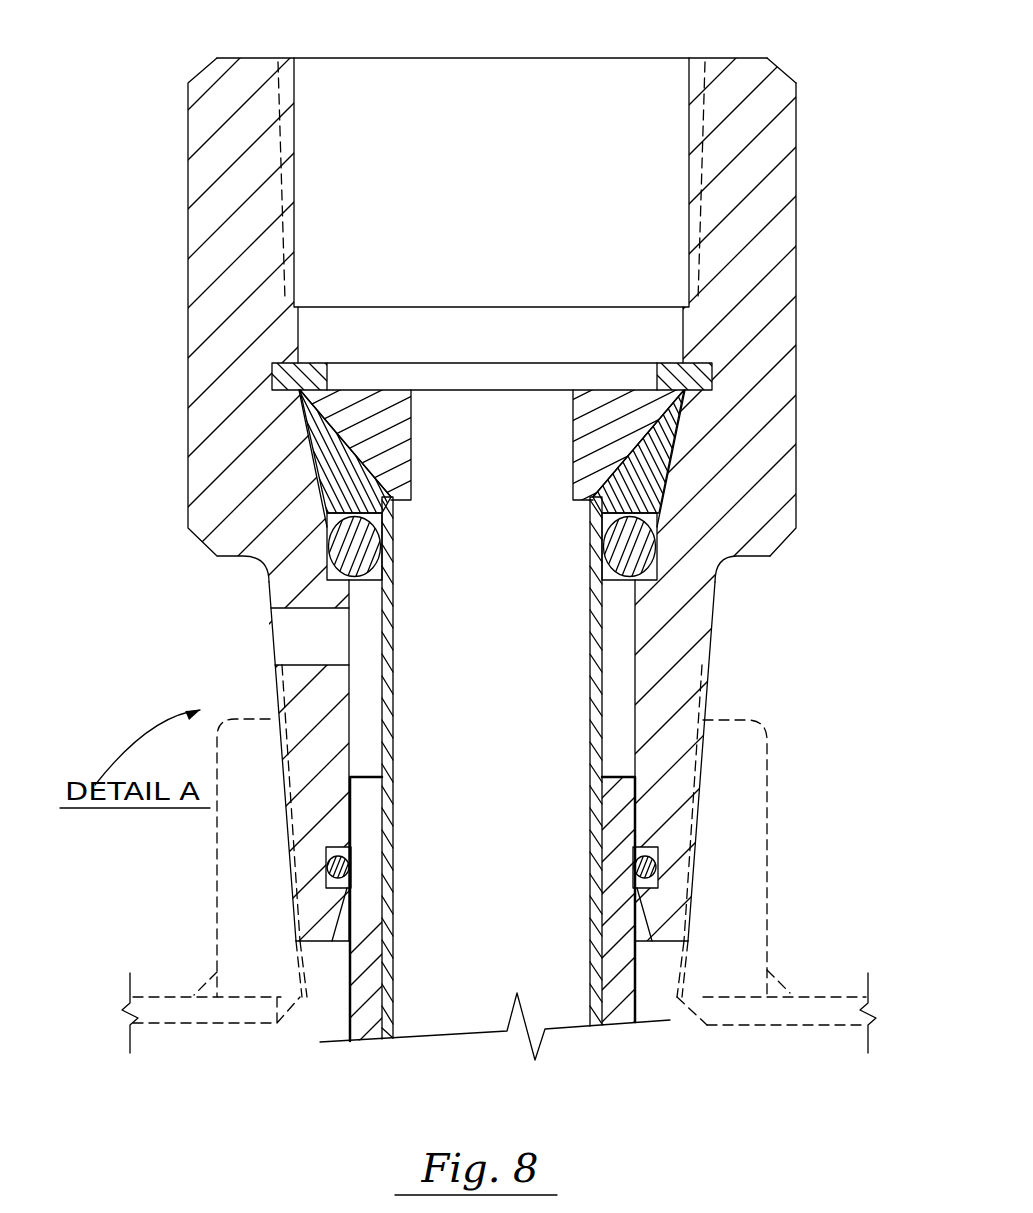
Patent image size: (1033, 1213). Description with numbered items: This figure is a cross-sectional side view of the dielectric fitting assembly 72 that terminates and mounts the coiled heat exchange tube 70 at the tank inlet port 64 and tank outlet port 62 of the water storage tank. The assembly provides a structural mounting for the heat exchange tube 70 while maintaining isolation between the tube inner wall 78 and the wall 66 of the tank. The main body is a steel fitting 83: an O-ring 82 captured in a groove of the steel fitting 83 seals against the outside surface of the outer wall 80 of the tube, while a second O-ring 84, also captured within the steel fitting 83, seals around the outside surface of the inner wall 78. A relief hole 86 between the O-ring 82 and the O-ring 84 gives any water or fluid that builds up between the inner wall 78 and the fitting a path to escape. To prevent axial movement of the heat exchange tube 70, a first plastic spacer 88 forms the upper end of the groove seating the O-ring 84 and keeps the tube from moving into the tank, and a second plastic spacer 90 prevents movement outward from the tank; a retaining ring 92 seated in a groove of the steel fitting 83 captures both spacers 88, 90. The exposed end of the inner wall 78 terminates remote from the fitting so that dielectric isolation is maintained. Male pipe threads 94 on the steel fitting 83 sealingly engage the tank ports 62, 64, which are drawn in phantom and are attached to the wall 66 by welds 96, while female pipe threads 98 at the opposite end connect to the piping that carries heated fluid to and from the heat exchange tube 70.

The dielectric fitting assembly 72 is at (822, 193).
The female pipe threads 98 is at (295, 130).
The steel fitting 83 is at (797, 313).
The male pipe threads 94 is at (703, 772).
The relief hole 86 is at (297, 608).
The retaining ring 92 is at (272, 372).
The second plastic spacer 90 is at (686, 393).
The first plastic spacer 88 is at (327, 472).
The O-ring 84 is at (657, 530).
The inner wall 78 is at (393, 993).
The outer wall 80 is at (367, 1027).
The heat exchange tube 70 is at (350, 1012).
The O-ring 82 is at (325, 873).
The tank outlet port 62 is at (517, 871).
The tank inlet port 64 is at (768, 835).
The welds 96 is at (780, 993).
The wall 66 is at (808, 997).